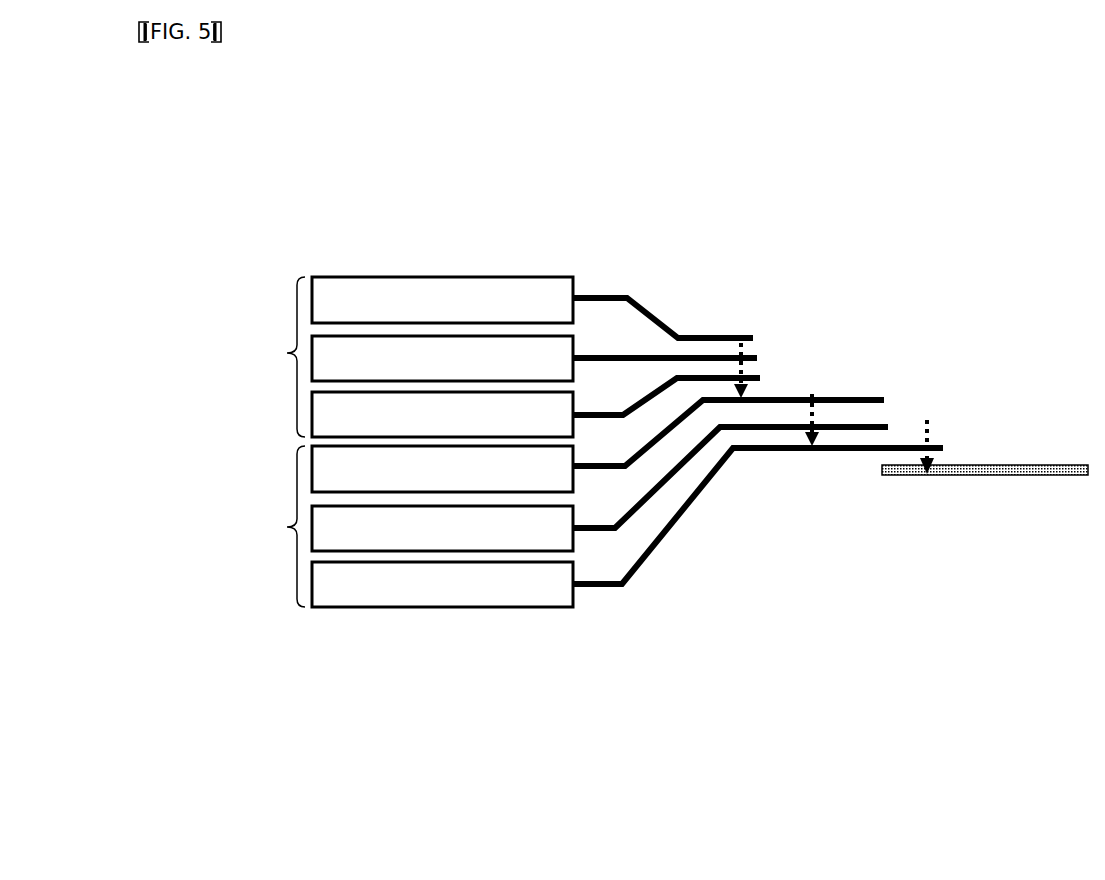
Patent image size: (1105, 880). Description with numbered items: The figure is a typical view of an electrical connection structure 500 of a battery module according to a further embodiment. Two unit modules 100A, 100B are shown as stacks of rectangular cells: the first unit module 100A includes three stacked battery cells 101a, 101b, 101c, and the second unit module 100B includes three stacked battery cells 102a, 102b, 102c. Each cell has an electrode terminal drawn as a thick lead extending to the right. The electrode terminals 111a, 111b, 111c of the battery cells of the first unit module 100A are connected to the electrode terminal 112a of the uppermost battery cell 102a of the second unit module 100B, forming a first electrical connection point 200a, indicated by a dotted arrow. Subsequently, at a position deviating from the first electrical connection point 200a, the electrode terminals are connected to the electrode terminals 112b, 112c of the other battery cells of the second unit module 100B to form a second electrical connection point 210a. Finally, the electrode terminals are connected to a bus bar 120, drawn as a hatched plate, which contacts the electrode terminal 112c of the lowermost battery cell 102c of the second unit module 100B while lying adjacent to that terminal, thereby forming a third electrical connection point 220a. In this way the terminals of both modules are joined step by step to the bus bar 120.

The electrical connection structure of a battery module 500 is at (248, 190).
The first unit module 100A is at (271, 357).
The second unit module 100B is at (271, 526).
The battery cell 101a is at (346, 297).
The battery cell 101b is at (400, 357).
The battery cell 101c is at (470, 410).
The uppermost battery cell 102a is at (360, 484).
The battery cell 102b is at (413, 543).
The lowermost battery cell 102c is at (480, 567).
The electrode terminal 111a is at (600, 295).
The electrode terminal 111b is at (646, 353).
The electrode terminal 111c is at (702, 375).
The electrode terminal 112a is at (788, 396).
The electrode terminal 112b is at (763, 455).
The electrode terminal 112c is at (862, 457).
The first electrical connection point 200a is at (747, 352).
The second electrical connection point 210a is at (817, 406).
The third electrical connection point 220a is at (925, 432).
The bus bar 120 is at (988, 477).